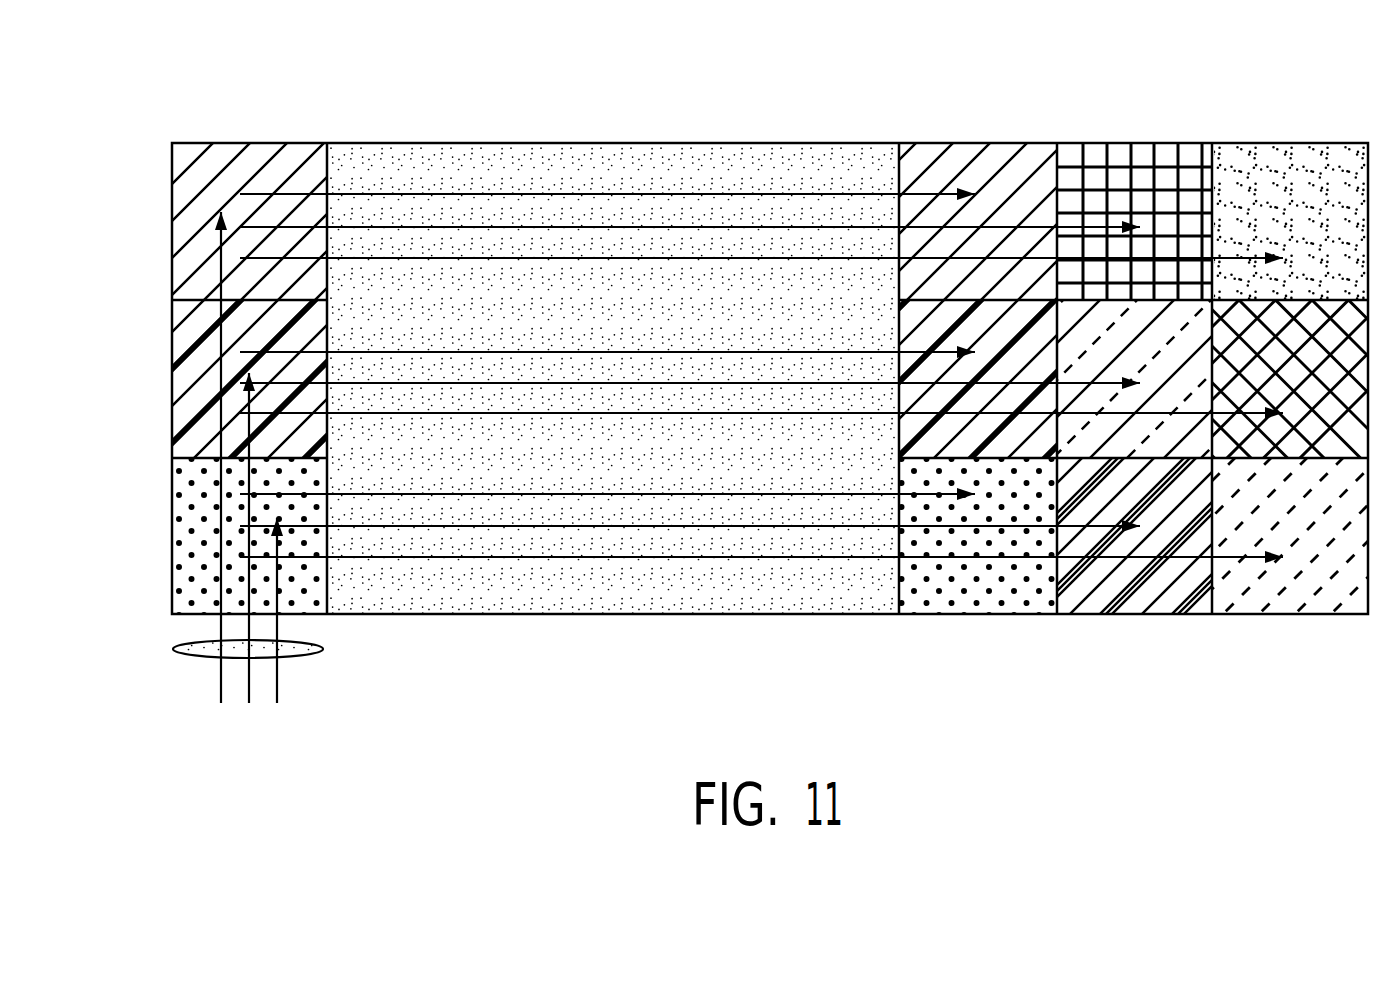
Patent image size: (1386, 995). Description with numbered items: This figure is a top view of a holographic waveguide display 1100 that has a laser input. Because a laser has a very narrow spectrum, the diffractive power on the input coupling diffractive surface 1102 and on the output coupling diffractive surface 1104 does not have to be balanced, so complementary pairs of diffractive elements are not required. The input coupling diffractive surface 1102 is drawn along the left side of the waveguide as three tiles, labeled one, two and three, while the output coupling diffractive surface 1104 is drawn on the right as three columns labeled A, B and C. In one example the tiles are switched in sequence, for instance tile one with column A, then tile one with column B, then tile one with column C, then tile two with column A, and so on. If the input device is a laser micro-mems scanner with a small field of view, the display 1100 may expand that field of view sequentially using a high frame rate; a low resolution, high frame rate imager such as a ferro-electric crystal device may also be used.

The holographic waveguide display 1100 is at (537, 81).
The input coupling diffractive surface 1102 is at (222, 119).
The output coupling diffractive surface 1104 is at (1368, 112).